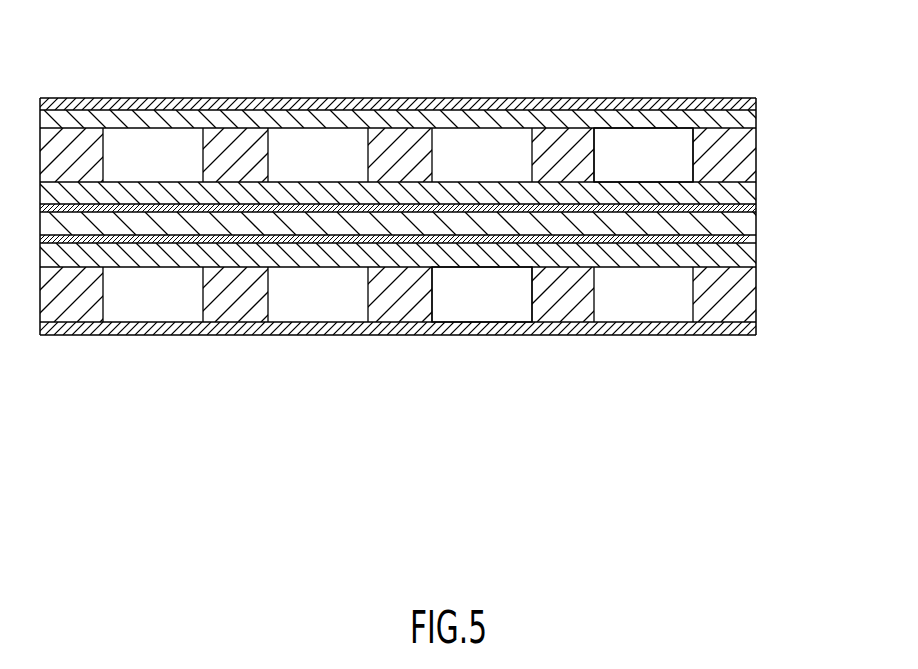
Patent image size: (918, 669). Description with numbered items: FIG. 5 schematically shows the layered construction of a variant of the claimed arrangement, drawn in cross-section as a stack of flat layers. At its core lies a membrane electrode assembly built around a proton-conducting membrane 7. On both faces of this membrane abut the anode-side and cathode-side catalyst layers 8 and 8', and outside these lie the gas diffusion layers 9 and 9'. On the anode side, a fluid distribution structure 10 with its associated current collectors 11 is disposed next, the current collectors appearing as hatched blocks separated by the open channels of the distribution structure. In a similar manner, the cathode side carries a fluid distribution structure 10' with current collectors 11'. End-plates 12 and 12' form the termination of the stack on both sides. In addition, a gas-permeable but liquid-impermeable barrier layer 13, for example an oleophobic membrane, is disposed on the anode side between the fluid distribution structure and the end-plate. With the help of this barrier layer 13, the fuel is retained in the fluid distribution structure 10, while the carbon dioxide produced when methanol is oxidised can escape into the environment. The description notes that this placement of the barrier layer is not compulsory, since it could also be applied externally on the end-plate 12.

The proton-conducting membrane 7 is at (735, 222).
The anode-side catalyst layer 8 is at (423, 194).
The cathode-side catalyst layer 8' is at (426, 249).
The anode-side gas diffusion layer 9 is at (416, 174).
The cathode-side gas diffusion layer 9' is at (418, 269).
The anode-side fluid distribution structure 10 is at (643, 111).
The cathode-side fluid distribution structure 10' is at (482, 326).
The anode-side current collectors 11 is at (411, 141).
The cathode-side current collectors 11' is at (414, 299).
The anode-side end-plate 12 is at (394, 75).
The cathode-side end-plate 12' is at (398, 354).
The barrier layer 13 is at (748, 120).